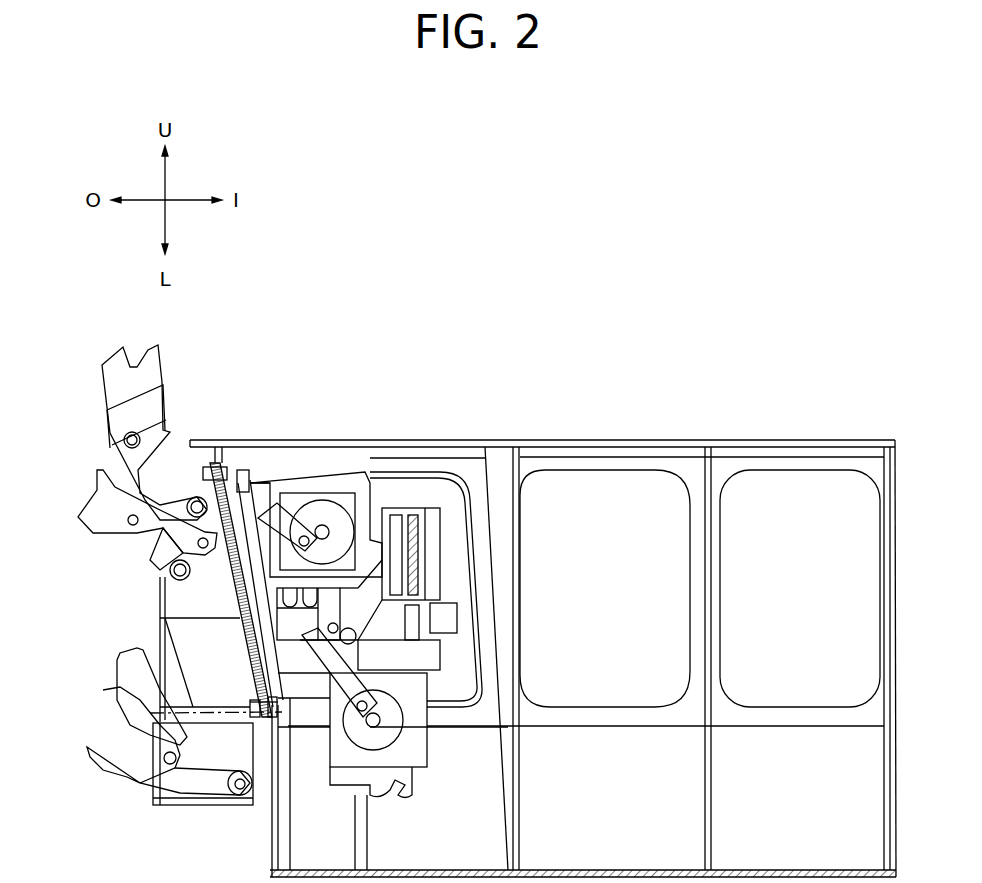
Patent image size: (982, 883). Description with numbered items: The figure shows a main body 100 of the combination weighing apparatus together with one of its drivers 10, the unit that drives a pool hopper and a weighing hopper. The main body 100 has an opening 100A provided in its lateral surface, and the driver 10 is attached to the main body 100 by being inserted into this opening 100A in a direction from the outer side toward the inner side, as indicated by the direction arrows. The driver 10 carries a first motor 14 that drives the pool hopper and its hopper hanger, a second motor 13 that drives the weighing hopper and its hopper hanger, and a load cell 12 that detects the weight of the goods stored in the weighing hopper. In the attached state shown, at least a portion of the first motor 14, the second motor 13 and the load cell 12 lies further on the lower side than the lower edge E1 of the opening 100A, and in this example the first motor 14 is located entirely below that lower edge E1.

The driver 10 is at (112, 604).
The load cell 12 is at (332, 600).
The second motor 13 is at (322, 512).
The first motor 14 is at (358, 740).
The main body 100 is at (734, 430).
The opening 100A is at (562, 468).
The lower edge E1 is at (150, 713).